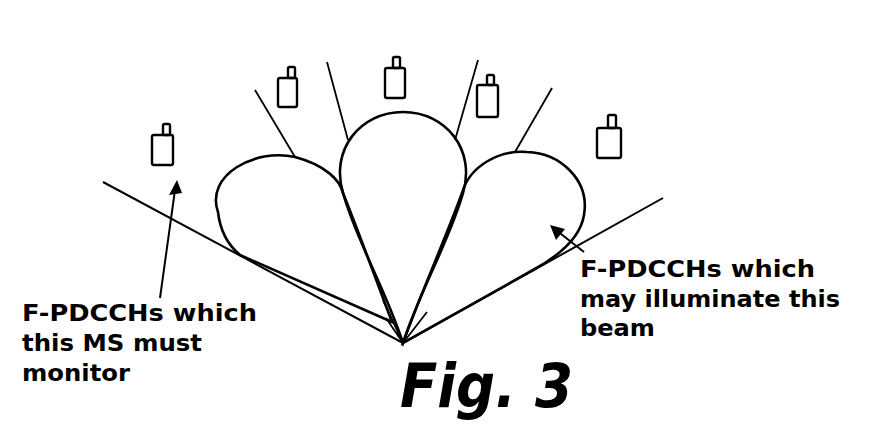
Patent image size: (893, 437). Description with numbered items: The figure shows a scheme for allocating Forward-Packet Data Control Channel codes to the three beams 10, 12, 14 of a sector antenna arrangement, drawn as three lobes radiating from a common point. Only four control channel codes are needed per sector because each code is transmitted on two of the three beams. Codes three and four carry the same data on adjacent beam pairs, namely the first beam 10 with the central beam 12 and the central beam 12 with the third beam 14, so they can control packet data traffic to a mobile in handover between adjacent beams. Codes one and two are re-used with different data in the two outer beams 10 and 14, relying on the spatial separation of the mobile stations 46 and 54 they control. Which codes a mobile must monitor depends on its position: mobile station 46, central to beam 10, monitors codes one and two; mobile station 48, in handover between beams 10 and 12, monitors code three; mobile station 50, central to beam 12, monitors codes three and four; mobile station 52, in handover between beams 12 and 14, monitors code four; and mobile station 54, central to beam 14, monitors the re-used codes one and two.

The beam 10 is at (252, 177).
The beam 12 is at (375, 127).
The beam 14 is at (570, 192).
The mobile station 46 is at (163, 150).
The mobile station 48 is at (283, 83).
The mobile station 50 is at (395, 72).
The mobile station 52 is at (487, 98).
The mobile station 54 is at (610, 135).